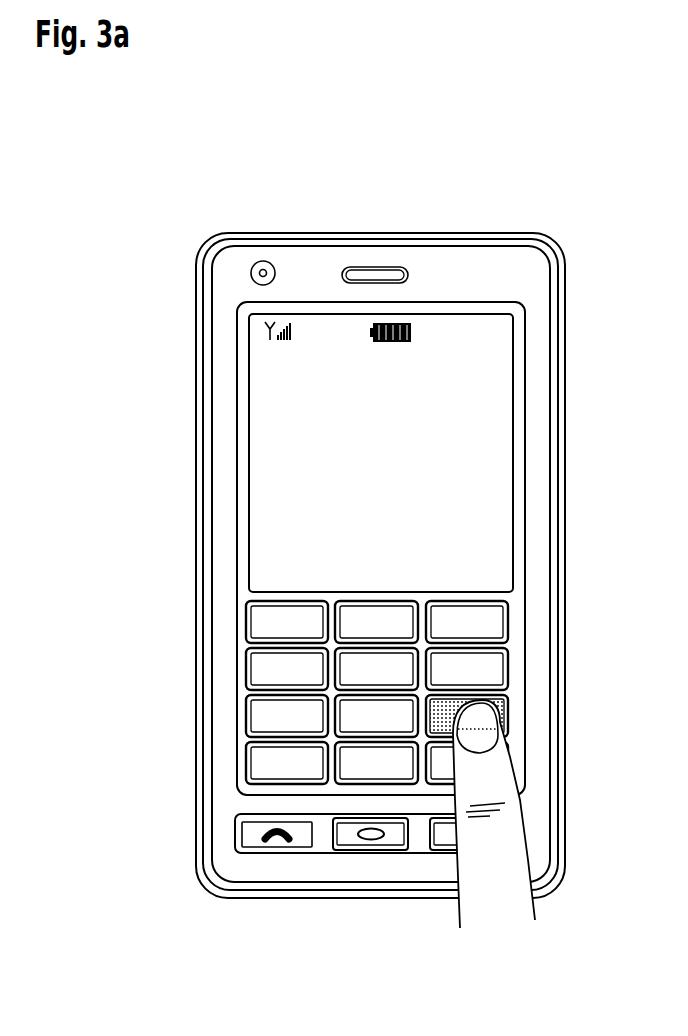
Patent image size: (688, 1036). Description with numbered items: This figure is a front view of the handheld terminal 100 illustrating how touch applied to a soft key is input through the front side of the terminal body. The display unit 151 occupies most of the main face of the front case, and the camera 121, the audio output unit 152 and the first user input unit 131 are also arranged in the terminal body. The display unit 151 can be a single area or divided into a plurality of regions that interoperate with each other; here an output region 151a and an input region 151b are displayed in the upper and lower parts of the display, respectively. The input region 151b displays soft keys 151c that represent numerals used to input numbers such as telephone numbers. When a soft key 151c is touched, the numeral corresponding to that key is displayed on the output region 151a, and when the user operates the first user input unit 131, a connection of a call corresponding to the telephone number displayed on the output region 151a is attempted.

The handheld terminal 100 is at (182, 212).
The camera 121 is at (262, 262).
The audio output unit 152 is at (386, 267).
The display unit 151 is at (230, 423).
The output region 151a is at (258, 496).
The input region 151b is at (285, 692).
The soft key 151c is at (258, 620).
The first user input unit 131 is at (278, 850).